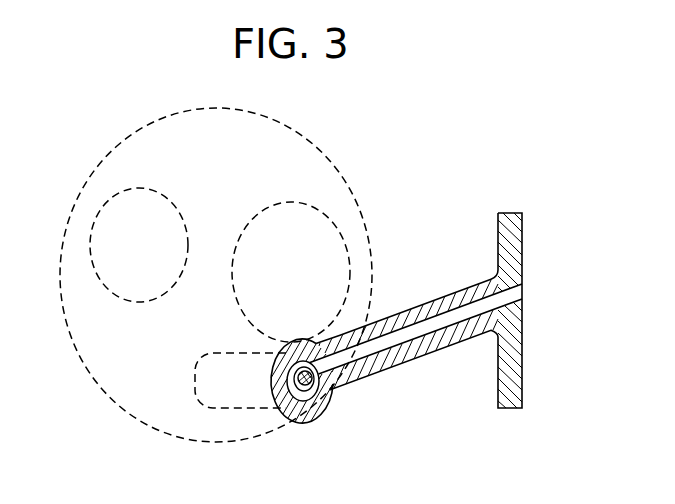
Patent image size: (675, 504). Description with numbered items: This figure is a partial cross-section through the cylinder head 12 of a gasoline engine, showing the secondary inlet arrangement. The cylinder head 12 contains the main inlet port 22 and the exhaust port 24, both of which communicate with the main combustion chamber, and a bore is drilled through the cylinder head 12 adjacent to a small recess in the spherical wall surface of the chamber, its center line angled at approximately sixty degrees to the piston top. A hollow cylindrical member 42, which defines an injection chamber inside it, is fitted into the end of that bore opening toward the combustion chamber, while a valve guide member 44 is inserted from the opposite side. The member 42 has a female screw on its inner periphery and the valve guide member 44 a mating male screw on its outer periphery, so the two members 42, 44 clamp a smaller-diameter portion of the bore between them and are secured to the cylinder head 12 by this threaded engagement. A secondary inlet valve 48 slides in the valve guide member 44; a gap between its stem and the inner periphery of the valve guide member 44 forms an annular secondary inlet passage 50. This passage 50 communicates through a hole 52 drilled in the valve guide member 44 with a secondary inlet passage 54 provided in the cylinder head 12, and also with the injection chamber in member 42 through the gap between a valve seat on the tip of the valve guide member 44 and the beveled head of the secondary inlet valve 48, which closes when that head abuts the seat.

The cylinder head 12 is at (519, 231).
The main inlet port 22 is at (330, 217).
The exhaust port 24 is at (166, 194).
The hollow cylindrical member 42 is at (220, 409).
The valve guide member 44 is at (327, 411).
The secondary inlet valve 48 is at (296, 381).
The annular secondary inlet passage 50 is at (311, 420).
The hole 52 is at (358, 378).
The secondary inlet passage 54 is at (517, 297).